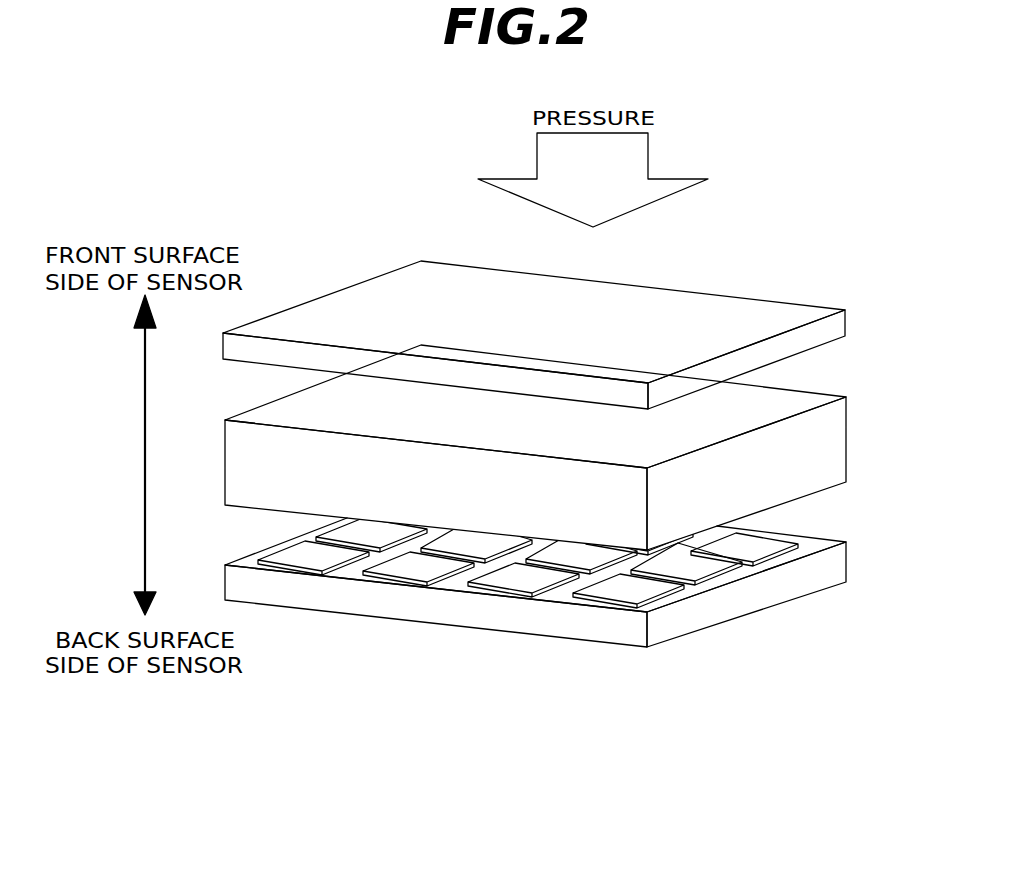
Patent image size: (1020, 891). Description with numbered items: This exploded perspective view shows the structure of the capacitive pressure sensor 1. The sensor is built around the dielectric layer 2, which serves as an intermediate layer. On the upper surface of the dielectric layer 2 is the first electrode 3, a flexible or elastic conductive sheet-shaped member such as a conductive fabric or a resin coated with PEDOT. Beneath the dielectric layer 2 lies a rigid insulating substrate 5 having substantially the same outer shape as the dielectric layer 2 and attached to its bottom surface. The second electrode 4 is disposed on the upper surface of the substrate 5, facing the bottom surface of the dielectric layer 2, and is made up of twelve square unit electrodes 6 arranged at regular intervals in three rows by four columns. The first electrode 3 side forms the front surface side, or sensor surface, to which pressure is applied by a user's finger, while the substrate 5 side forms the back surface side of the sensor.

The capacitive pressure sensor 1 is at (770, 228).
The dielectric layer 2 is at (820, 438).
The first electrode 3 is at (343, 308).
The second electrode 4 is at (592, 688).
The insulating substrate 5 is at (772, 588).
The unit electrodes 6 is at (297, 550).